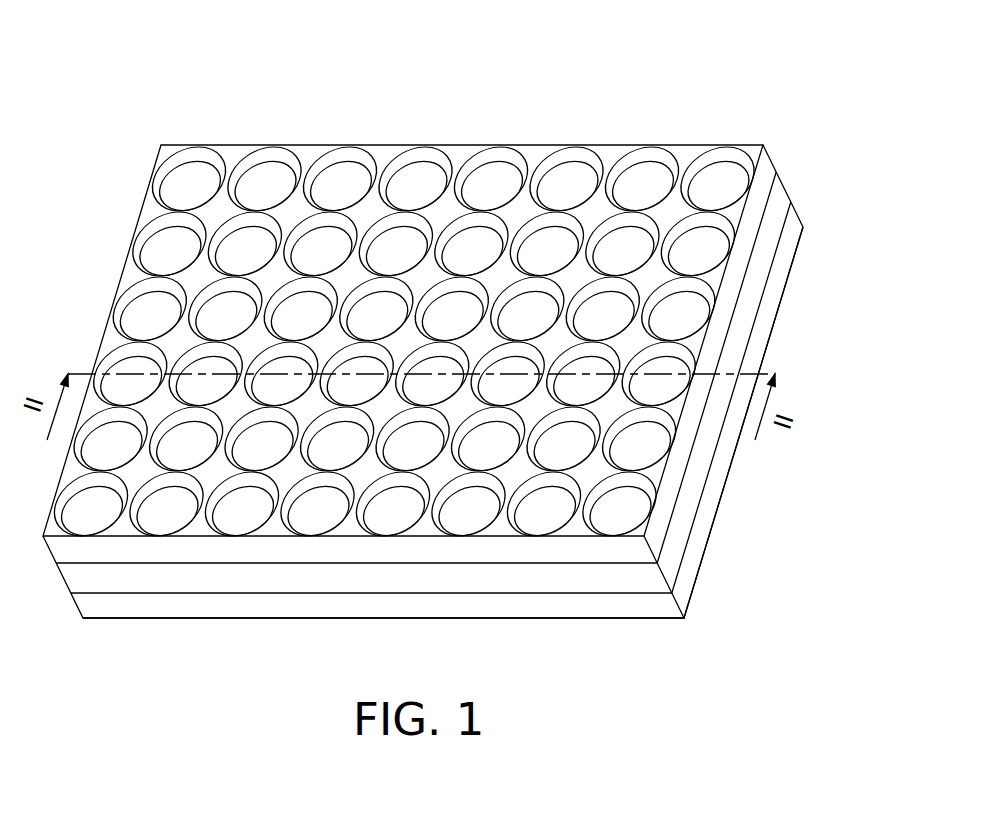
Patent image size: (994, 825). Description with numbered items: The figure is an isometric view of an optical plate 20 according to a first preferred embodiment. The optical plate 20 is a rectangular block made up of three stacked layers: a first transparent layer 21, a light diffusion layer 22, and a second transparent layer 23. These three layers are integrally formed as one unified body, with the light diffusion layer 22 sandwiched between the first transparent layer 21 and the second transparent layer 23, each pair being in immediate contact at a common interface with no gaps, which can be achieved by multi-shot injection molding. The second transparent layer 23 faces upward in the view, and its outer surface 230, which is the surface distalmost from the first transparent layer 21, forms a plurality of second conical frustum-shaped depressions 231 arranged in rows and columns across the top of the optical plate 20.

The optical plate 20 is at (437, 47).
The first transparent layer 21 is at (795, 237).
The light diffusion layer 22 is at (780, 207).
The second transparent layer 23 is at (763, 175).
The outer surface 230 is at (683, 153).
The second conical frustum-shaped depressions 231 is at (723, 157).